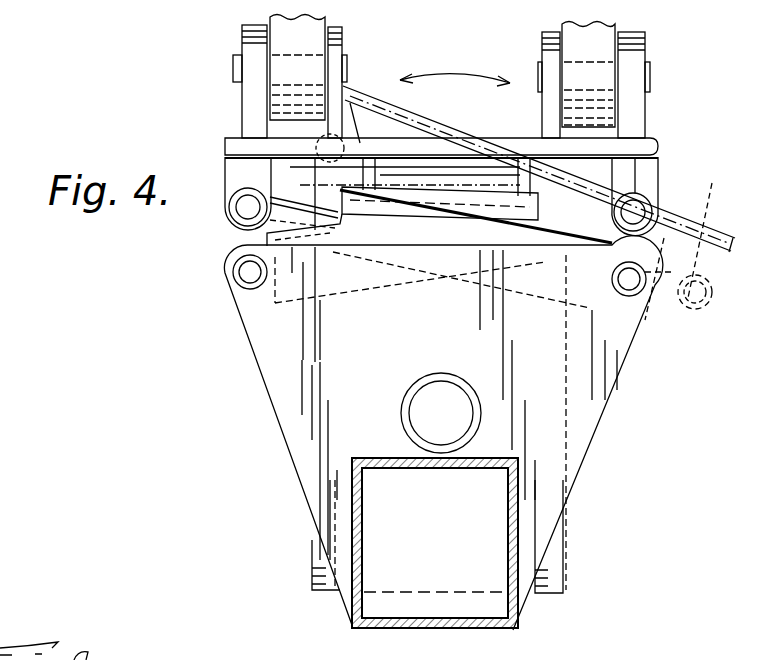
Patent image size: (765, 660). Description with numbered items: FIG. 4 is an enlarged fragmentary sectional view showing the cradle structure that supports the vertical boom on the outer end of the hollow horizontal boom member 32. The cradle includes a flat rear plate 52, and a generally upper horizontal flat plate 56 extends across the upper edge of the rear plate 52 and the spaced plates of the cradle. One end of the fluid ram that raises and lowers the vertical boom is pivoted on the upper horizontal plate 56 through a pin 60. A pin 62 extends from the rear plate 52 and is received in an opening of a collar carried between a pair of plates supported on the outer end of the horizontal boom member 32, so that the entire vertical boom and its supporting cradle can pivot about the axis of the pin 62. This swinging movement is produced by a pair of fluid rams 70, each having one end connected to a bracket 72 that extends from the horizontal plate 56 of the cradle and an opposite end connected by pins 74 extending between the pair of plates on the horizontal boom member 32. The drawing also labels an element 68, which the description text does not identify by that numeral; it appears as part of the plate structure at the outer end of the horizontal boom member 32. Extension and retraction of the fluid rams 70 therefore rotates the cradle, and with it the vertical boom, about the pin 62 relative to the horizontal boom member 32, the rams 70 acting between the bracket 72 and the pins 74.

The horizontal boom member 32 is at (387, 630).
The rear plate 52 is at (548, 570).
The upper horizontal flat plate 56 is at (653, 153).
The pin 60 is at (233, 66).
The pin 62 is at (438, 400).
The triangular plate 68 is at (583, 420).
The fluid rams 70 is at (413, 207).
The bracket 72 is at (240, 165).
The pins 74 is at (630, 287).